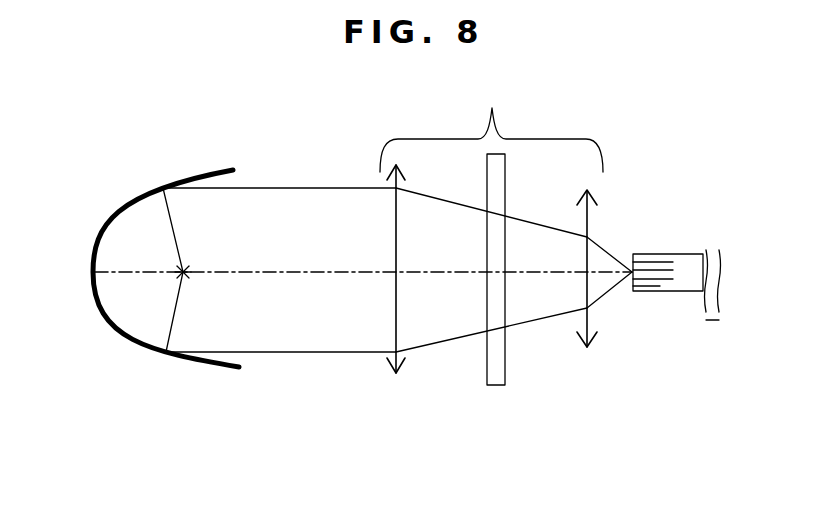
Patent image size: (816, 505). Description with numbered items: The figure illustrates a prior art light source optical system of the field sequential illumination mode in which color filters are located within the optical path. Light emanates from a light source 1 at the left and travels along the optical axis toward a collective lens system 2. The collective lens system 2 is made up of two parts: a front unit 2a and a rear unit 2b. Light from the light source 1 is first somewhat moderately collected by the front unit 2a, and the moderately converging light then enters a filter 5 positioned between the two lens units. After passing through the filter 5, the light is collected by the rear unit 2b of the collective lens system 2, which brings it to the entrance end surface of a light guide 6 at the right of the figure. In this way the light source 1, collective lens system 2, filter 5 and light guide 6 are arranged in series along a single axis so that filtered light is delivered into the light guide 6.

The light source 1 is at (137, 200).
The collective lens system 2 is at (492, 272).
The front unit 2a is at (395, 342).
The rear unit 2b is at (594, 311).
The filter 5 is at (488, 372).
The light guide 6 is at (660, 254).